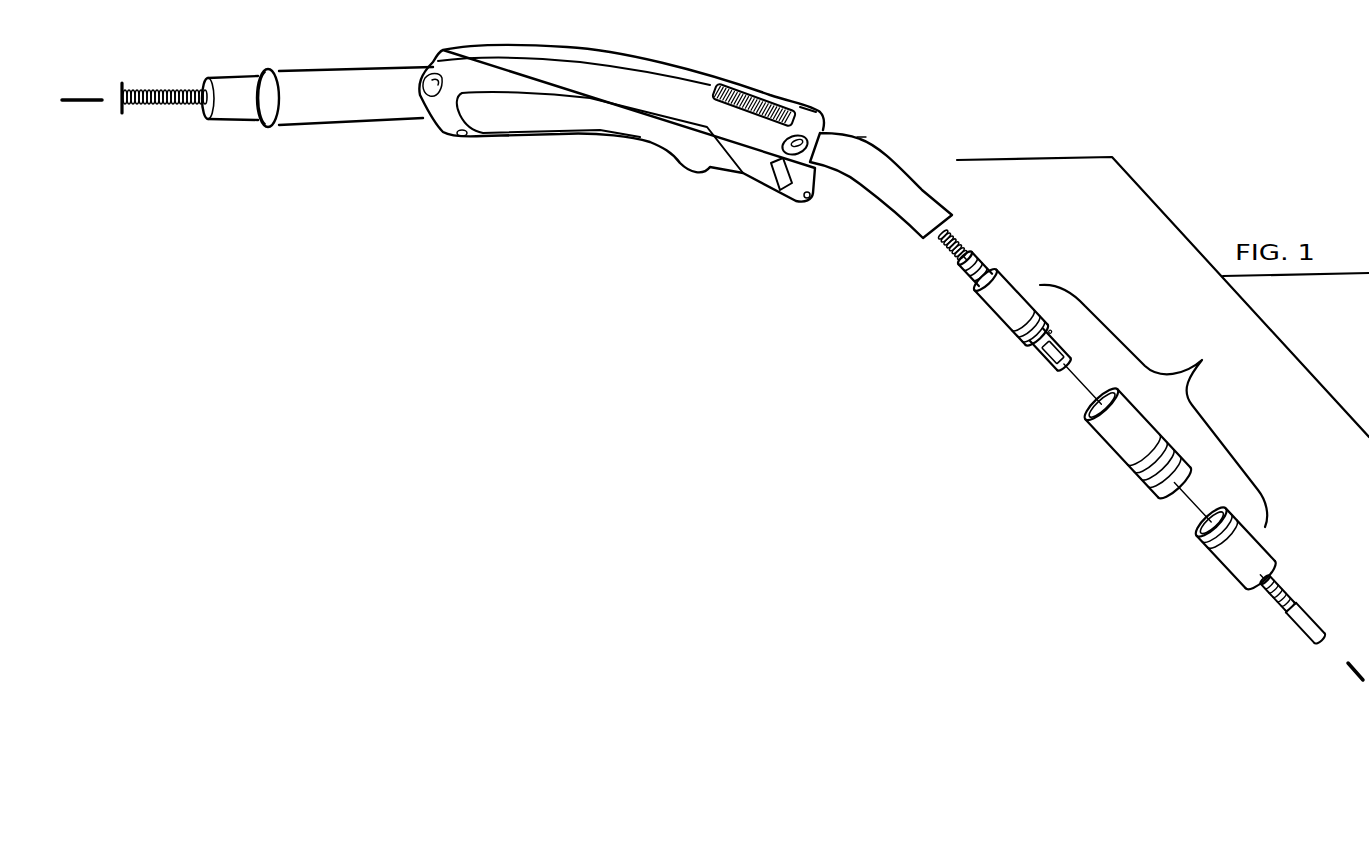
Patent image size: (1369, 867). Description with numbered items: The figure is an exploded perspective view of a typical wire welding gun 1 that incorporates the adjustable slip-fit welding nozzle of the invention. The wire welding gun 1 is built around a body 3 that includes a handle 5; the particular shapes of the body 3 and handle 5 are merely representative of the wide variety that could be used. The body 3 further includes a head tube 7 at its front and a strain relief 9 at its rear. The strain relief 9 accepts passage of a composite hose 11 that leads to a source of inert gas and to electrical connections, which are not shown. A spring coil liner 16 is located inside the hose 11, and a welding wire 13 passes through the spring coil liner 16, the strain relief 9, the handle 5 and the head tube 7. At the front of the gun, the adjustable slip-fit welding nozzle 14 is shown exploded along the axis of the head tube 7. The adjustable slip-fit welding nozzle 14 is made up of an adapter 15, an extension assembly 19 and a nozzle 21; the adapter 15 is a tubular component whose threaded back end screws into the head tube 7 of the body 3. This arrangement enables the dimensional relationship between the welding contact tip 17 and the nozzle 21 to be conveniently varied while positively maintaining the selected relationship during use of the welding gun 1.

The wire welding gun 1 is at (745, 418).
The body 3 is at (866, 137).
The handle 5 is at (600, 124).
The head tube 7 is at (883, 182).
The strain relief 9 is at (355, 98).
The composite hose 11 is at (240, 98).
The welding wire 13 is at (85, 103).
The adjustable slip-fit welding nozzle 14 is at (1147, 495).
The adapter 15 is at (997, 315).
The spring coil liner 16 is at (173, 107).
The welding contact tip 17 is at (1296, 626).
The extension assembly 19 is at (1093, 439).
The nozzle 21 is at (1215, 571).